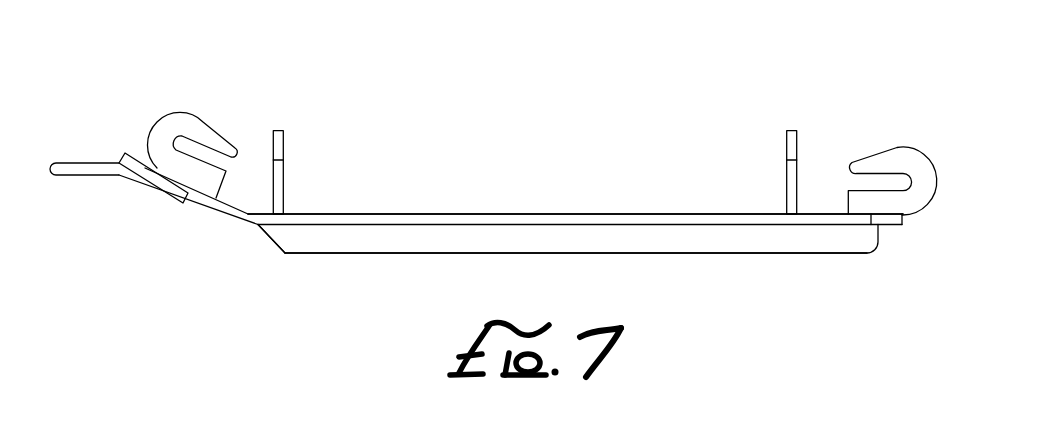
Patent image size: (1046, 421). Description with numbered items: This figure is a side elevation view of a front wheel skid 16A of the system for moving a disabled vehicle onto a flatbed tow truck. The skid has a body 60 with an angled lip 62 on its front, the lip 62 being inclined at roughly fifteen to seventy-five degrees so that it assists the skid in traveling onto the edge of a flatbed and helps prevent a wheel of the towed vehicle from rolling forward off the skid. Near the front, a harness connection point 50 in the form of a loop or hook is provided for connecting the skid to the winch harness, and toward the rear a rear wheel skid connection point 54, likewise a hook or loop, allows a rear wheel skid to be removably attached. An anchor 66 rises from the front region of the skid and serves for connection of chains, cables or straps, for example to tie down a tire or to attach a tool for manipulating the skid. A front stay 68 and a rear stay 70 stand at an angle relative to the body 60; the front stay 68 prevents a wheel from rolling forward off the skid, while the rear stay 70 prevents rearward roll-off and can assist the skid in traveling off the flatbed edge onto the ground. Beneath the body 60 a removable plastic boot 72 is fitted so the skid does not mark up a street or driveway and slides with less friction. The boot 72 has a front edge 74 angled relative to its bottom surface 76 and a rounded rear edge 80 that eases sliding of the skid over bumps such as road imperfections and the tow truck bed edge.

The front wheel skid 16A is at (597, 200).
The harness connection point 50 is at (78, 162).
The rear wheel skid connection point 54 is at (905, 147).
The body 60 is at (443, 214).
The angled lip 62 is at (238, 208).
The anchor 66 is at (183, 112).
The front stay 68 is at (283, 177).
The rear stay 70 is at (787, 177).
The removable plastic boot 72 is at (745, 236).
The front edge 74 is at (271, 240).
The bottom surface 76 is at (372, 253).
The rounded rear edge 80 is at (878, 242).